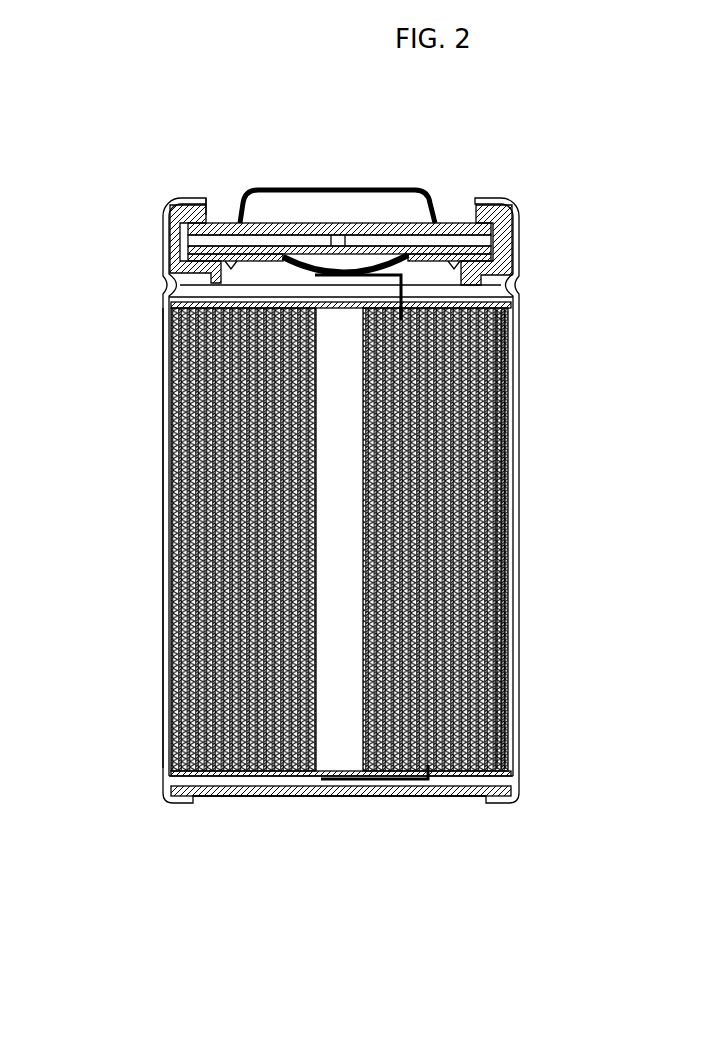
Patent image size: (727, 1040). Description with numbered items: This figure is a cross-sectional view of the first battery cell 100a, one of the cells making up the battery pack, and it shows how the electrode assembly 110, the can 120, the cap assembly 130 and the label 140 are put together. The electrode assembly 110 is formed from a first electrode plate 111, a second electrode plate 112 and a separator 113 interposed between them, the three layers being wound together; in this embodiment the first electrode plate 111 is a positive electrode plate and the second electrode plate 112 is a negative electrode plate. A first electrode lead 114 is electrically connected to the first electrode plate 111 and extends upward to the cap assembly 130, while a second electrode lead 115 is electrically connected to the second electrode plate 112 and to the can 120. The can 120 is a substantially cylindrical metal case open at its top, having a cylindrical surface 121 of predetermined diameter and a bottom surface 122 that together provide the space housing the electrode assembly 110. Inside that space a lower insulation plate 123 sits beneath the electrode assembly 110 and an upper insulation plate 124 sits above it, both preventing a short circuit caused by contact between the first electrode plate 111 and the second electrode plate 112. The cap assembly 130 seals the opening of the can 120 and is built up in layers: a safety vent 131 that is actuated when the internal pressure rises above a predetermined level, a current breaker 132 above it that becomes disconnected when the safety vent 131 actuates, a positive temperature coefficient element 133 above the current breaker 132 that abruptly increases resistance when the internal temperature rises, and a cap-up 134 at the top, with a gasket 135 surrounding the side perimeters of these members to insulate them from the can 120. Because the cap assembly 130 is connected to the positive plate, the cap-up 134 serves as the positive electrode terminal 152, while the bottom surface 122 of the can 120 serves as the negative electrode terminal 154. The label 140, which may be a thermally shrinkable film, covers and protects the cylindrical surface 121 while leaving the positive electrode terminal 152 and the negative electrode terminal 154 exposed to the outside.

The first battery cell 100a is at (126, 155).
The electrode assembly 110 is at (606, 340).
The first electrode plate 111 is at (503, 365).
The second electrode plate 112 is at (498, 423).
The separator 113 is at (498, 392).
The first electrode lead 114 is at (502, 328).
The second electrode lead 115 is at (422, 772).
The can 120 is at (67, 727).
The cylindrical surface 121 is at (162, 735).
The bottom surface 122 is at (212, 789).
The lower insulation plate 123 is at (247, 770).
The upper insulation plate 124 is at (183, 283).
The cap assembly 130 is at (497, 128).
The safety vent 131 is at (373, 240).
The current breaker 132 is at (357, 236).
The positive temperature coefficient (PTC) 133 is at (446, 216).
The cap-up 134 is at (313, 179).
The gasket 135 is at (467, 202).
The label 140 is at (155, 617).
The positive electrode terminal 152 is at (263, 176).
The negative electrode terminal 154 is at (338, 814).